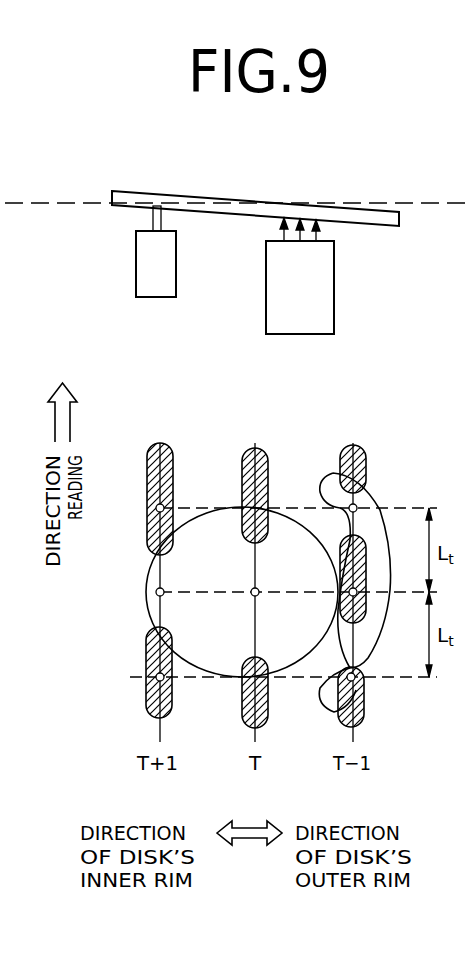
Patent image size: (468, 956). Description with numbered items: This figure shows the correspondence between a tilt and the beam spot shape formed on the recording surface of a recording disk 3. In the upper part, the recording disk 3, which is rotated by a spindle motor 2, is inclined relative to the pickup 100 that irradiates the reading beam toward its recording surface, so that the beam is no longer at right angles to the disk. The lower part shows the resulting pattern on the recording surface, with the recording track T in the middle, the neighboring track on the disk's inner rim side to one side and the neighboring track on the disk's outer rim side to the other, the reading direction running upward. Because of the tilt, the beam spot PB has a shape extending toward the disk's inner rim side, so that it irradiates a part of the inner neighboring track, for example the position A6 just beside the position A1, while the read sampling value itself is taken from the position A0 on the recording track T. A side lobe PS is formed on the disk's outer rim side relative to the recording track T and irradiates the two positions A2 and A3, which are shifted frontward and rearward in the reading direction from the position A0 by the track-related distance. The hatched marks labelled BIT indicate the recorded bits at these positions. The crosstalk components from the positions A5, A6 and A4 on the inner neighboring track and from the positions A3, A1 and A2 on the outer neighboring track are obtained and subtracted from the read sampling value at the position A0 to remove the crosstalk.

The spindle motor 2 is at (136, 259).
The recording disk 3 is at (272, 200).
The pickup 100 is at (266, 318).
The beam spot PB is at (198, 522).
The side lobe PS is at (329, 476).
The recorded bit (pit) BIT is at (128, 674).
The position on recording track T A0 is at (260, 589).
The position on recording track T-1 A1 is at (343, 598).
The position on recording track T-1 A2 is at (357, 504).
The position on recording track T-1 A3 is at (361, 690).
The position on recording track T+1 A4 is at (157, 504).
The position on recording track T+1 A5 is at (166, 683).
The position on recording track T+1 A6 is at (166, 589).